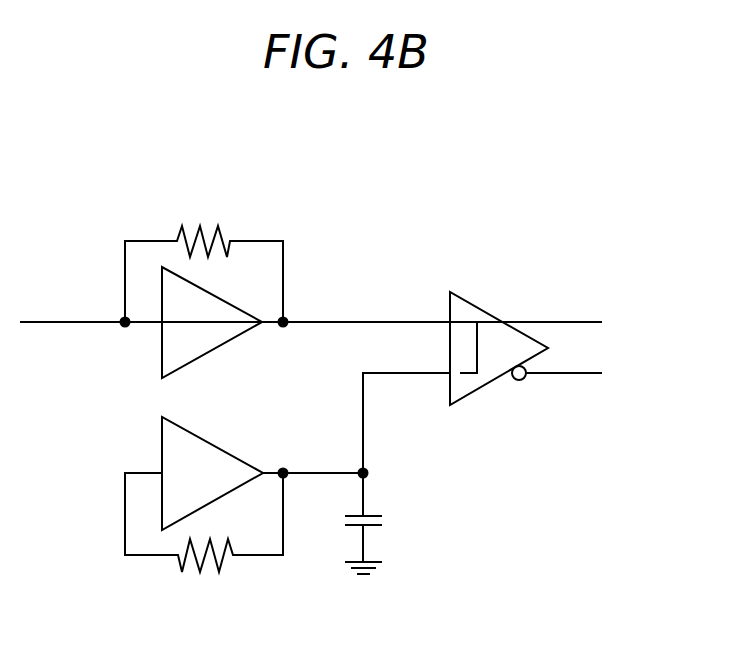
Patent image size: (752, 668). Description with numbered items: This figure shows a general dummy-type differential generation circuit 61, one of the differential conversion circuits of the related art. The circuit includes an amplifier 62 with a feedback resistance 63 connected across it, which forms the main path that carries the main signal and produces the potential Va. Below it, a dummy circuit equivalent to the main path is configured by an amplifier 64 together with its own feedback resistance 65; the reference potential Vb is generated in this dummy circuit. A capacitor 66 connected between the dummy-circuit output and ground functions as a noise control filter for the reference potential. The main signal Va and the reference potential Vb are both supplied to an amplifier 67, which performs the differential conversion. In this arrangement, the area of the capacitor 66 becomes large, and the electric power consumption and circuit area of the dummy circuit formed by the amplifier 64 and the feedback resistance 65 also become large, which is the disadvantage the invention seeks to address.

The dummy-type differential generation circuit 61 is at (549, 182).
The amplifier 62 is at (160, 348).
The feedback resistance 63 is at (202, 237).
The amplifier 64 is at (162, 448).
The feedback resistance 65 is at (212, 573).
The capacitor 66 is at (370, 515).
The amplifier 67 is at (485, 308).